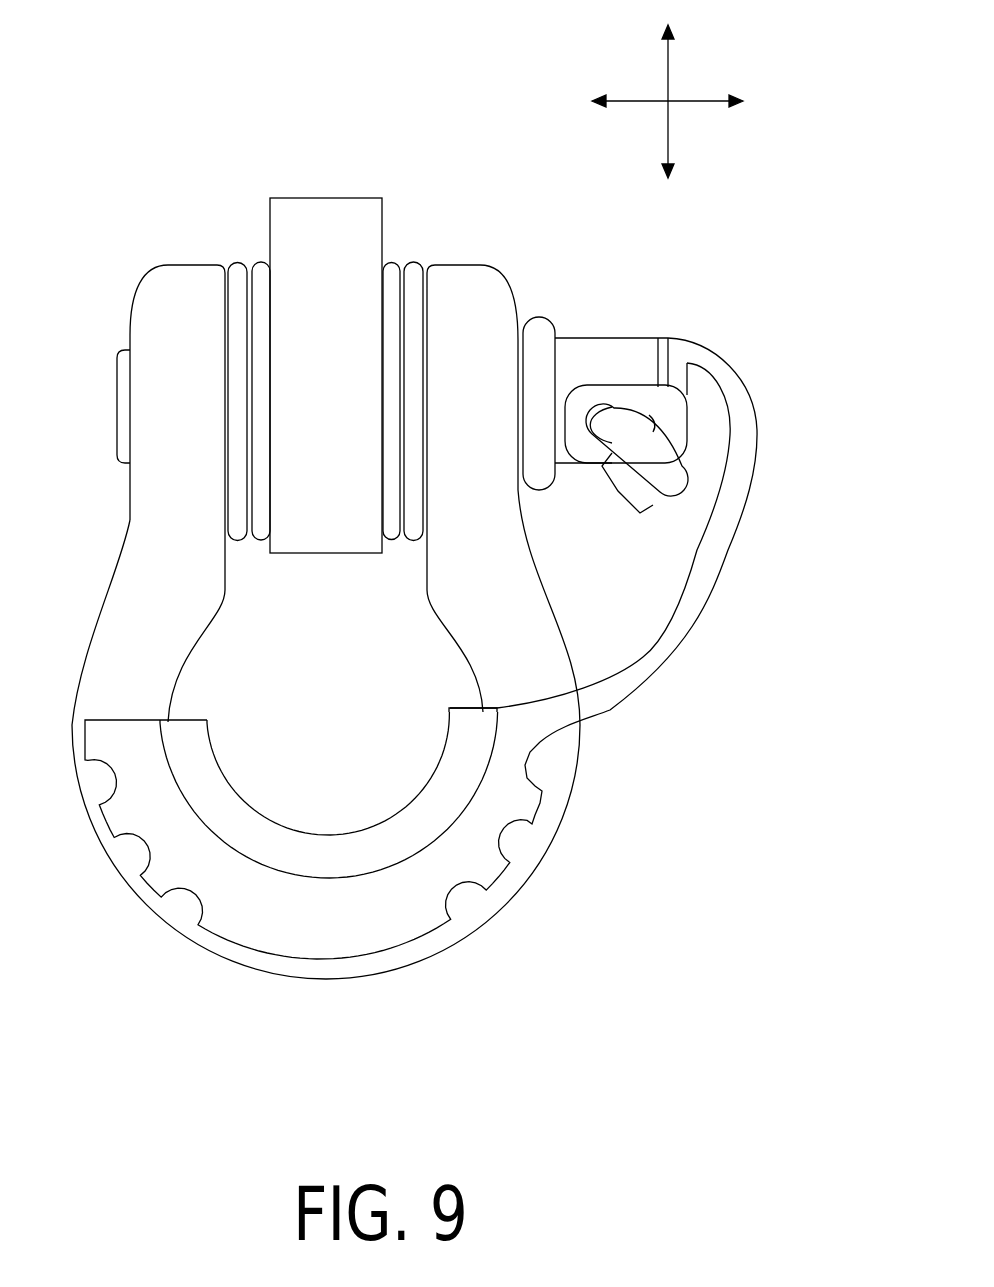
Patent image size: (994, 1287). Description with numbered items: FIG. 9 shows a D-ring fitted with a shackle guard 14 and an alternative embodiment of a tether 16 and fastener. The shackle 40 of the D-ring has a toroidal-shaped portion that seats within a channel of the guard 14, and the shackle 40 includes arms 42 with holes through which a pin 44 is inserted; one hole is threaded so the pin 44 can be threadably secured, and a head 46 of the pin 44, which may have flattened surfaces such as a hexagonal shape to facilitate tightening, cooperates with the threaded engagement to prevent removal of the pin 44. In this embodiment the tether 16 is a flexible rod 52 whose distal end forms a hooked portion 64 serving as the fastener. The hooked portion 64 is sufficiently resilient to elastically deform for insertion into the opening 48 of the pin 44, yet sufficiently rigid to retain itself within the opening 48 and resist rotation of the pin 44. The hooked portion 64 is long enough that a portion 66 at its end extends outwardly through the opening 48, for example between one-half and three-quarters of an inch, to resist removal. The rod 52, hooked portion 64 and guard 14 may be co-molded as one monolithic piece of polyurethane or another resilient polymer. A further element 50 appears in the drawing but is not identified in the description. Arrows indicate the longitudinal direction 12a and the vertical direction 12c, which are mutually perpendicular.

The longitudinal direction 12a is at (717, 103).
The vertical direction 12c is at (668, 75).
The guard 14 is at (327, 822).
The tether 16 is at (705, 630).
The shackle 40 is at (132, 573).
The arms 42 is at (198, 288).
The pin 44 is at (122, 410).
The head 46 is at (535, 335).
The opening 48 is at (611, 412).
The bolt block 50 is at (320, 213).
The rod 52 is at (641, 657).
The hooked portion 64 is at (770, 328).
The portion 66 is at (618, 491).